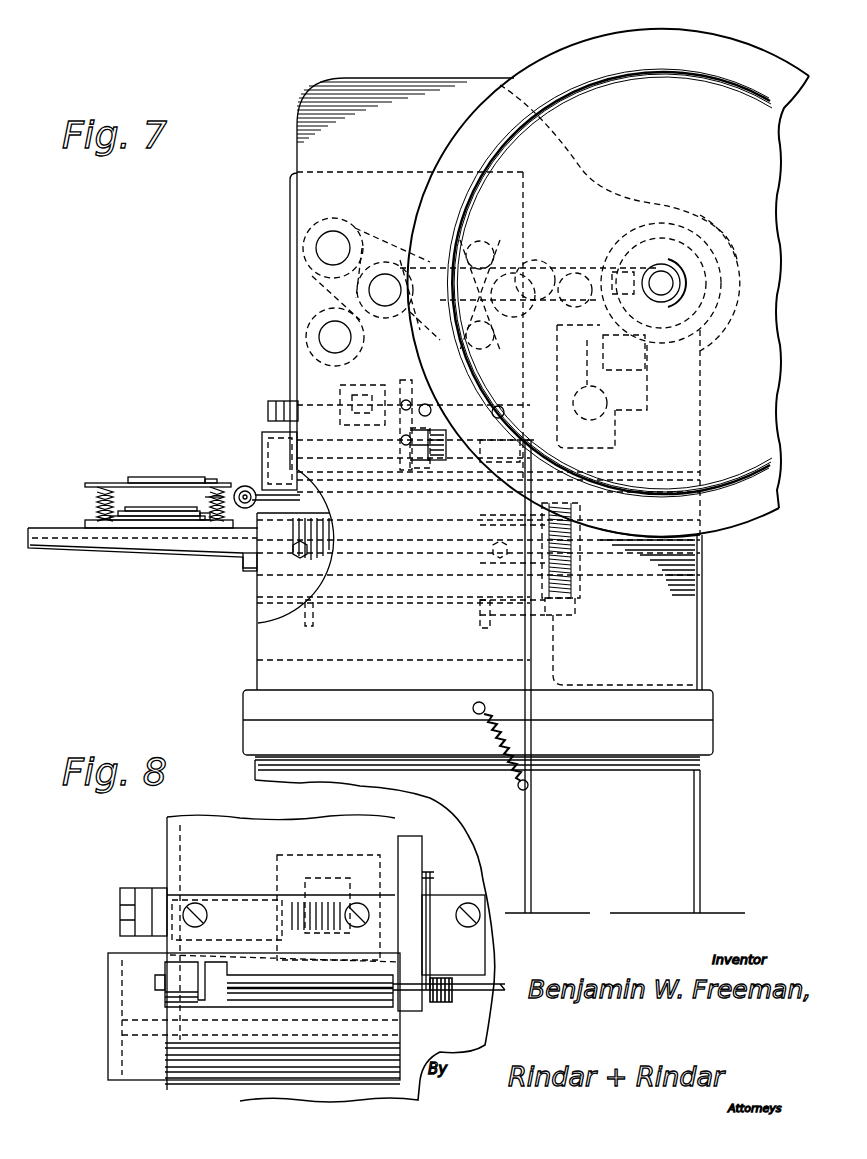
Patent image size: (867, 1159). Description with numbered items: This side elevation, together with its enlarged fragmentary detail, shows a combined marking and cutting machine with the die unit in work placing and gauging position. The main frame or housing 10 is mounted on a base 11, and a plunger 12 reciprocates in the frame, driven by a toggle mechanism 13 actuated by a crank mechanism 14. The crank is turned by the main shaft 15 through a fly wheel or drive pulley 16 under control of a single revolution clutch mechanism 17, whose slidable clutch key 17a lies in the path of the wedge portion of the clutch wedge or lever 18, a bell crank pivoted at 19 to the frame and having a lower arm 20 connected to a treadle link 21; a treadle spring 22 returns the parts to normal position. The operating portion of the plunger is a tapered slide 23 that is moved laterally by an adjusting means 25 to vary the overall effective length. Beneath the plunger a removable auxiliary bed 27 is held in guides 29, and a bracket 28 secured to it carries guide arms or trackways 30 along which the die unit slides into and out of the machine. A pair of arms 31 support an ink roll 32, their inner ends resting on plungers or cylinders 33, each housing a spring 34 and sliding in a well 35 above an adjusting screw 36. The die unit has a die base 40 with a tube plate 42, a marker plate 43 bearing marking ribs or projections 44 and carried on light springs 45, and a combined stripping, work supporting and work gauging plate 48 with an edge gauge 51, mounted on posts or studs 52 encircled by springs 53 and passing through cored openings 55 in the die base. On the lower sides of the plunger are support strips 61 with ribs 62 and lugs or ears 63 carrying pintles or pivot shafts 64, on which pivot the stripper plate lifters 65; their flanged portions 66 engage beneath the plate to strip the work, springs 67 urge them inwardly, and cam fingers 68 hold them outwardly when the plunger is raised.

In FIG. 7, the main frame 10 is at (420, 97).
In FIG. 7, the base 11 is at (680, 850).
In FIG. 7, the plunger 12 is at (290, 290).
In FIG. 8, the plunger 12 is at (186, 833).
In FIG. 7, the toggle mechanism 13 is at (378, 245).
In FIG. 7, the crank mechanism 14 is at (572, 268).
In FIG. 7, the main shaft 15 is at (674, 278).
In FIG. 7, the fly wheel or drive pulley 16 is at (708, 44).
In FIG. 7, the single revolution clutch mechanism 17 is at (668, 245).
In FIG. 7, the slidable clutch key 17a is at (628, 250).
In FIG. 7, the clutch wedge or lever 18 is at (690, 372).
In FIG. 7, the pivot 19 is at (612, 398).
In FIG. 7, the lower arm 20 is at (590, 448).
In FIG. 7, the treadle link 21 is at (531, 866).
In FIG. 7, the treadle spring 22 is at (478, 738).
In FIG. 7, the tapered slide 23 is at (262, 440).
In FIG. 7, the adjusting means 25 is at (275, 401).
In FIG. 7, the auxiliary bed 27 is at (265, 590).
In FIG. 7, the bracket 28 is at (246, 562).
In FIG. 7, the guides 29 is at (368, 612).
In FIG. 7, the guide arms or trackways 30 is at (122, 540).
In FIG. 7, the arms 31 is at (270, 492).
In FIG. 7, the ink roll 32 is at (238, 488).
In FIG. 7, the plungers or cylinders 33 is at (600, 527).
In FIG. 7, the spring 34 is at (580, 560).
In FIG. 7, the well 35 is at (575, 590).
In FIG. 7, the adjusting screw 36 is at (560, 618).
In FIG. 7, the die base 40 is at (88, 521).
In FIG. 7, the tube plate 42 is at (158, 520).
In FIG. 7, the marker plate 43 is at (120, 511).
In FIG. 7, the marking ribs or projections 44 is at (130, 507).
In FIG. 7, the springs 45 is at (204, 520).
In FIG. 7, the stripping, work supporting and work gauging plate 48 is at (92, 483).
In FIG. 7, the edge gauge 51 is at (165, 477).
In FIG. 7, the posts or studs 52 is at (210, 479).
In FIG. 7, the springs 53 is at (205, 497).
In FIG. 7, the cored openings 55 is at (98, 542).
In FIG. 7, the support strips 61 is at (420, 388).
In FIG. 8, the support strips 61 is at (226, 893).
In FIG. 7, the ribs 62 is at (445, 410).
In FIG. 7, the lugs or ears 63 is at (500, 410).
In FIG. 8, the lugs or ears 63 is at (170, 972).
In FIG. 7, the pintles or pivot shafts 64 is at (472, 440).
In FIG. 8, the pintles or pivot shafts 64 is at (492, 983).
In FIG. 7, the stripper plate lifter 65 is at (323, 410).
In FIG. 8, the stripper plate lifter 65 is at (478, 1020).
In FIG. 7, the concaved or flanged portion 66 is at (330, 540).
In FIG. 8, the concaved or flanged portion 66 is at (182, 1056).
In FIG. 8, the spring 67 is at (438, 976).
In FIG. 7, the cam finger 68 is at (392, 386).
In FIG. 8, the cam finger 68 is at (415, 862).